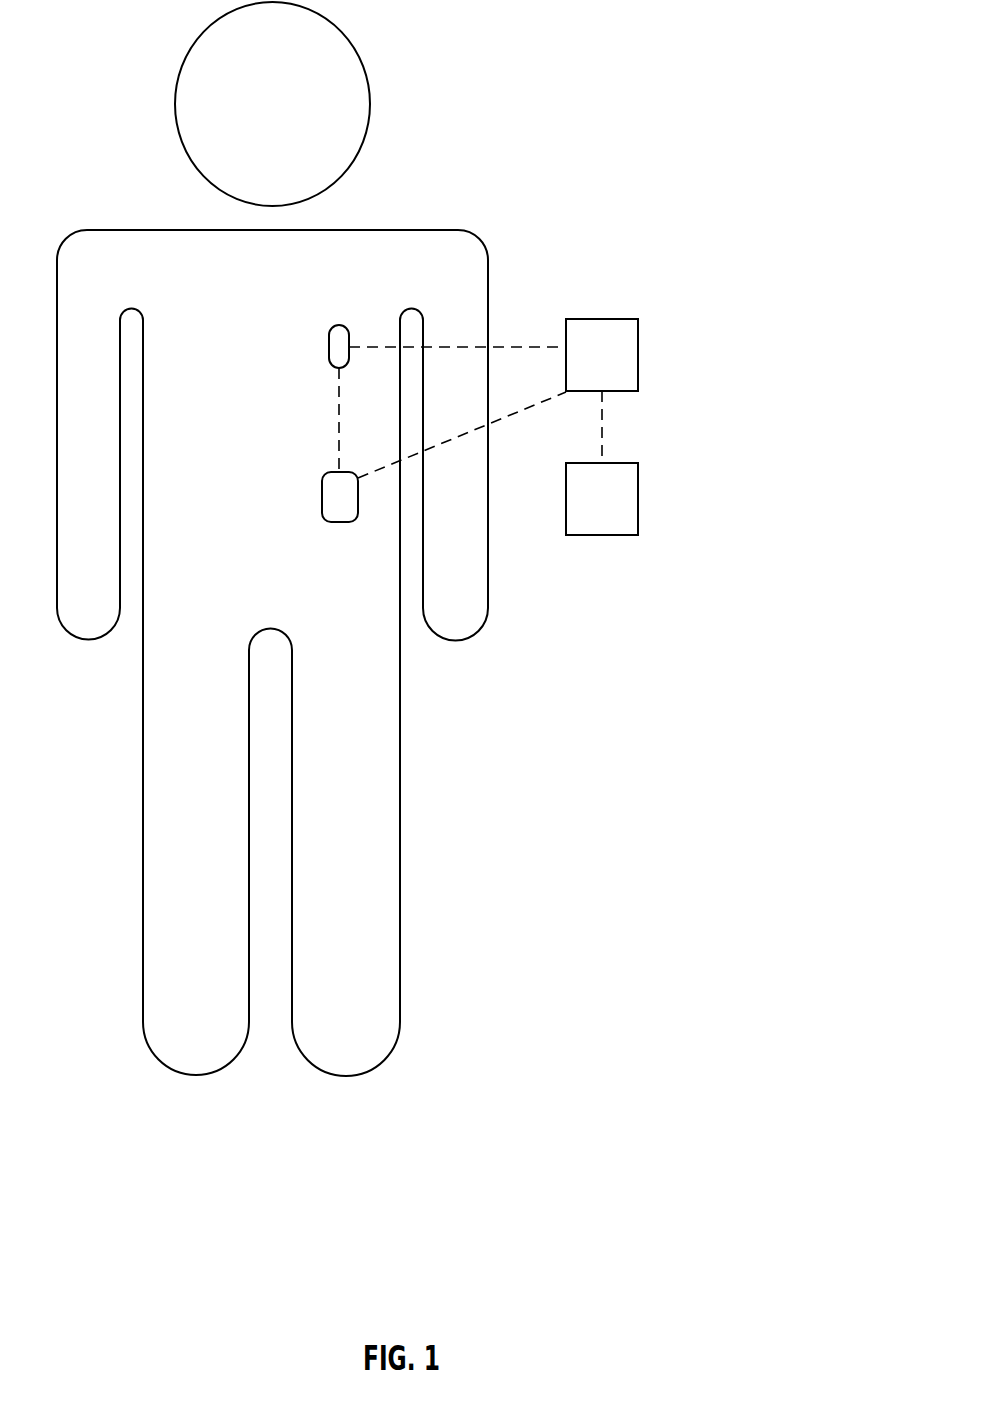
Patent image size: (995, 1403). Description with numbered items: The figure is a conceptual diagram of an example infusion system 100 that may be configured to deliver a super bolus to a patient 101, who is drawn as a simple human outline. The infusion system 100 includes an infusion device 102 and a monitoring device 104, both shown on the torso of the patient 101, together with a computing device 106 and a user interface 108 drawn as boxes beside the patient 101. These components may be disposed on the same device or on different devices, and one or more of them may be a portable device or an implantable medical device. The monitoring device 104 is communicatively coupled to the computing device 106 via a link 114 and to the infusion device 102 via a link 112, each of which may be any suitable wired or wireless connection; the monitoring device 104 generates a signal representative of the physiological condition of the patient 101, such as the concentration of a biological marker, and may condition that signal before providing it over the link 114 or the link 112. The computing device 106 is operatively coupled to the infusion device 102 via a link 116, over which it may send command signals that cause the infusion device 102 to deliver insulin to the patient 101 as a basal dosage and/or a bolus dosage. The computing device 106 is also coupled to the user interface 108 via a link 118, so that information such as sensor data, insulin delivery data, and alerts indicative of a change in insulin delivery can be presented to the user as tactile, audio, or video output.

The infusion system 100 is at (750, 157).
The patient 101 is at (138, 229).
The infusion device 102 is at (324, 484).
The monitoring device 104 is at (330, 333).
The computing device 106 is at (630, 319).
The user interface 108 is at (630, 463).
The link 112 is at (337, 444).
The link 114 is at (503, 347).
The link 116 is at (522, 408).
The link 118 is at (603, 458).